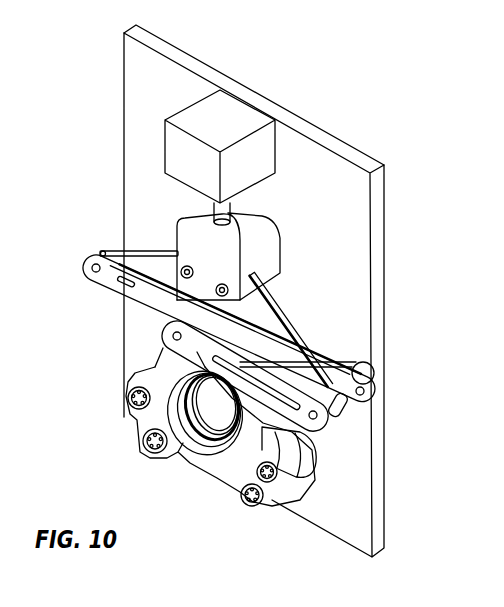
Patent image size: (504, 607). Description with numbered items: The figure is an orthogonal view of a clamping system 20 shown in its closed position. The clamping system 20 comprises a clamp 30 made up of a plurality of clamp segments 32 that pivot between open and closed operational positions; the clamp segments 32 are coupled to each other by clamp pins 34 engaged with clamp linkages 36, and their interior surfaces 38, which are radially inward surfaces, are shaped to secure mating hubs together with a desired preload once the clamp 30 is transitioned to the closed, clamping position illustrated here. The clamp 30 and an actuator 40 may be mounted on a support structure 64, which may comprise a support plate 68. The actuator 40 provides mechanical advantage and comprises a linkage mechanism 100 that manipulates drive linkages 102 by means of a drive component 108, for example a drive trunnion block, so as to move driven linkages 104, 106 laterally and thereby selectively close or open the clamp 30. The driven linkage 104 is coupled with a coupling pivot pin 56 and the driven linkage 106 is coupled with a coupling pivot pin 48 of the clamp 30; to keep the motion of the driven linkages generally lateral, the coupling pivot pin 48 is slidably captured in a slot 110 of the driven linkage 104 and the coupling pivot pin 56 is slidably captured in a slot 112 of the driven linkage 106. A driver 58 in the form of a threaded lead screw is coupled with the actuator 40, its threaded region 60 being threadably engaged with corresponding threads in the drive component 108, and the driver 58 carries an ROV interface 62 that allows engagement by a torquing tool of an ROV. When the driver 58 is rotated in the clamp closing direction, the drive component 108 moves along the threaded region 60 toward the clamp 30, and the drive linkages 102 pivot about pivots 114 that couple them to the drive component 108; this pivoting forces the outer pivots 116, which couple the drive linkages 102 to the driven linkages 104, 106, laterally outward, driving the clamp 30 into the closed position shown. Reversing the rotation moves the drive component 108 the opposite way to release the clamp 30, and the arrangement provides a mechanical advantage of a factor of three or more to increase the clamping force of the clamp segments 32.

The clamping system 20 is at (355, 128).
The clamp 30 is at (117, 418).
The clamp segments 32 is at (32, 0).
The clamp pins 34 is at (90, 0).
The clamp linkages 36 is at (299, 490).
The interior surfaces 38 is at (204, 390).
The actuator 40 is at (340, 338).
The coupling pivot pin 48 is at (165, 337).
The coupling pivot pin 56 is at (356, 362).
The driver 58 is at (232, 210).
The threaded region 60 is at (210, 212).
The ROV interface 62 is at (280, 150).
The support structure 64 is at (195, 58).
The support plate 68 is at (366, 194).
The linkage mechanism 100 is at (280, 300).
The drive linkages 102 is at (150, 265).
The driven linkage 104 is at (97, 286).
The driven linkage 106 is at (330, 418).
The drive component 108 is at (284, 247).
The slot 110 is at (125, 293).
The slot 112 is at (360, 397).
The pivots 114 is at (220, 284).
The pivots 116 is at (92, 283).